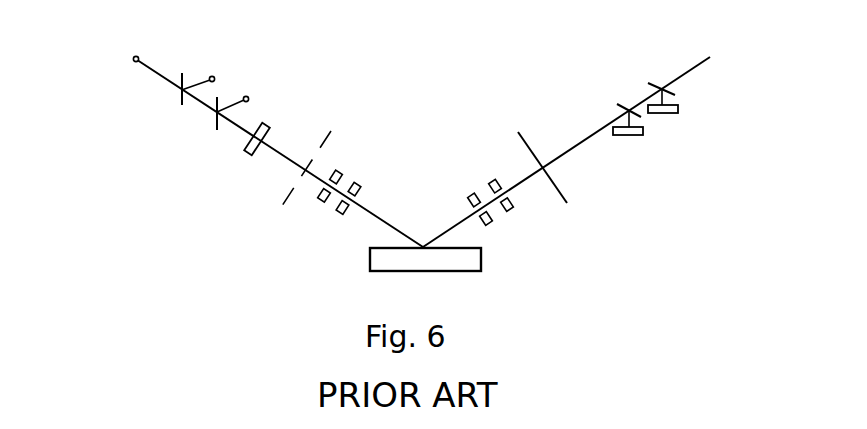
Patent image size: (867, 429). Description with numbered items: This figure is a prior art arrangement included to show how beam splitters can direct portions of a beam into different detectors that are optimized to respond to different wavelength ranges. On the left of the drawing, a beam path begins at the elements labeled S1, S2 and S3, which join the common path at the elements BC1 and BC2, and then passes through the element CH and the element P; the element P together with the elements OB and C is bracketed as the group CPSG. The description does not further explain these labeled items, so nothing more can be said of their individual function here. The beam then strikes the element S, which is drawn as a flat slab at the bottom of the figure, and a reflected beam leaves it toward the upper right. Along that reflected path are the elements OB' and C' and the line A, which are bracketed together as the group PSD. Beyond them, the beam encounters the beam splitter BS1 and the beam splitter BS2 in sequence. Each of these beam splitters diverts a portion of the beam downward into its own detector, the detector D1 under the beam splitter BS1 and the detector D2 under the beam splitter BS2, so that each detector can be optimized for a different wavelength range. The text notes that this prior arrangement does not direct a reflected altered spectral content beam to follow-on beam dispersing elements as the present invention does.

The first light source S1 is at (126, 51).
The second light source S2 is at (209, 75).
The third light source S3 is at (250, 97).
The first beam combiner BC1 is at (178, 110).
The second beam combiner BC2 is at (214, 132).
The chopper CH is at (246, 160).
The polarizer P is at (269, 213).
The polarization state generator CPSG is at (295, 180).
The objective lens OB is at (338, 137).
The compensator C is at (358, 162).
The sample S is at (419, 273).
The polarization state detector PSD is at (511, 166).
The objective lens OB' is at (524, 232).
The compensator C' is at (538, 211).
The analyzer A is at (523, 130).
The beam splitter BS1 is at (619, 107).
The beam splitter BS2 is at (656, 79).
The detector D1 is at (635, 141).
The detector D2 is at (670, 118).